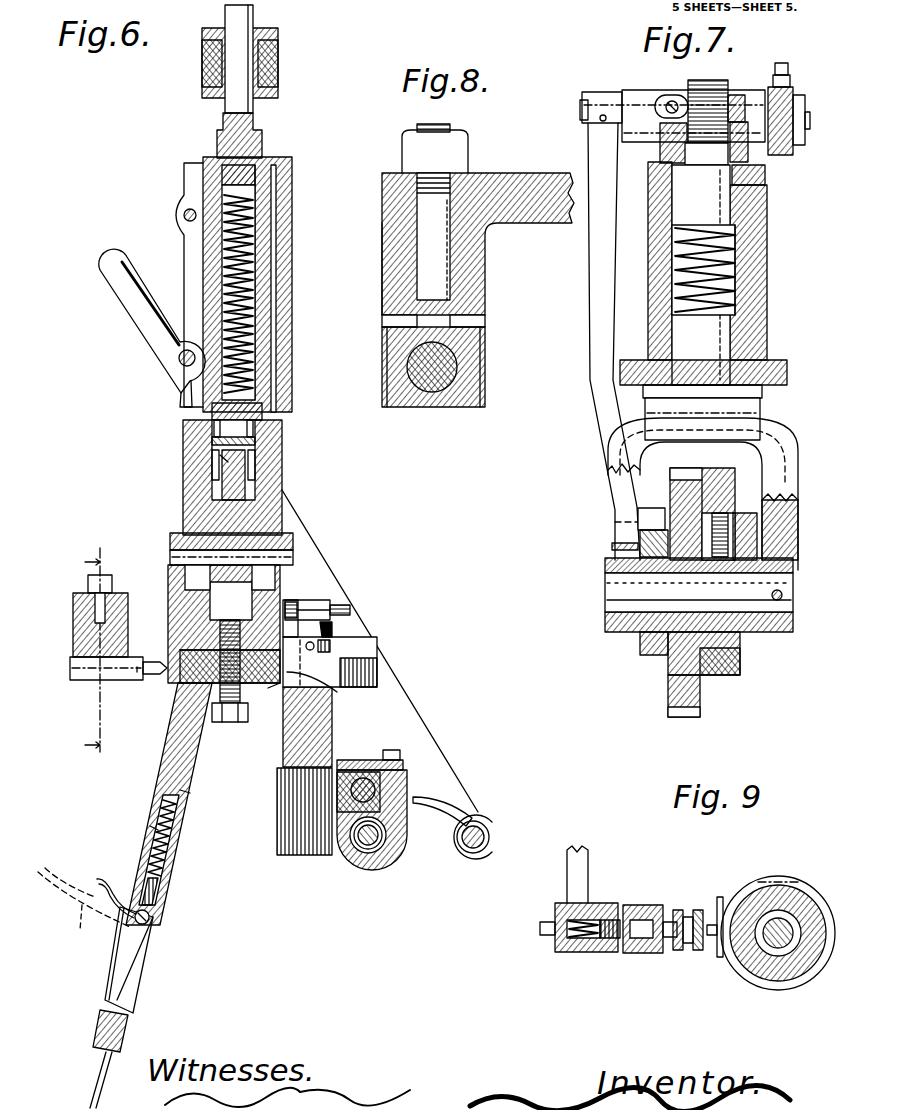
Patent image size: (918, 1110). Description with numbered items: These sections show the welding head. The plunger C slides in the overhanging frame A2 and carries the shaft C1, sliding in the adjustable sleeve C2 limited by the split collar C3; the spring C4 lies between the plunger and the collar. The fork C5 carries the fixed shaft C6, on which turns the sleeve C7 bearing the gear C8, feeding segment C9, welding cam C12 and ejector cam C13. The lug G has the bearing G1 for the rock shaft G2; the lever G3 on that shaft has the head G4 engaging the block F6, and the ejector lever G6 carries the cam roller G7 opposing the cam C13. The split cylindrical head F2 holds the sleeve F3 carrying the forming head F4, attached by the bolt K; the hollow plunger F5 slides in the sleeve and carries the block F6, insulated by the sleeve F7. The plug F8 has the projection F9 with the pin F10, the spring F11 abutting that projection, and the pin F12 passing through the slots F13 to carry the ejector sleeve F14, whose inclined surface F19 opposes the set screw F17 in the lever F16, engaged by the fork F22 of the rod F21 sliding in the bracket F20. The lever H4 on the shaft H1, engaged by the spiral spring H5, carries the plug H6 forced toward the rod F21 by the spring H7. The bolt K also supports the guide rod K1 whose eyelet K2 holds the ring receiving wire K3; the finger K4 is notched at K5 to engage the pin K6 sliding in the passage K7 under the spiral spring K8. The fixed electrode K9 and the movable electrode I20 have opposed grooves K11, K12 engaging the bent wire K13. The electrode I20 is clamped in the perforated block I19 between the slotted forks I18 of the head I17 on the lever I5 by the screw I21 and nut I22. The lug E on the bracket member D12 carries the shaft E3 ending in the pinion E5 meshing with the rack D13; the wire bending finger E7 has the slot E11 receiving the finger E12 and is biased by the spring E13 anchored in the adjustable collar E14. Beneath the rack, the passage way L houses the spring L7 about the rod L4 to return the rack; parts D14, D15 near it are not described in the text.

In FIG. 6, the block F6 is at (262, 33).
In FIG. 6, the head G4 is at (203, 66).
In FIG. 6, the sleeve F7 is at (226, 104).
In FIG. 6, the hollow plunger F5 is at (250, 140).
In FIG. 9, the hollow plunger F5 is at (783, 957).
In FIG. 6, the split cylindrical head F2 is at (284, 304).
In FIG. 6, the sleeve F3 is at (266, 286).
In FIG. 9, the sleeve F3 is at (803, 963).
In FIG. 6, the spring F11 is at (242, 231).
In FIG. 6, the lever H4 is at (125, 305).
In FIG. 9, the lever H4 is at (583, 857).
In FIG. 6, the plug F8 is at (240, 512).
In FIG. 6, the projection F9 is at (246, 482).
In FIG. 9, the projection F9 is at (767, 952).
In FIG. 6, the pin F10 is at (240, 441).
In FIG. 6, the rod F21 is at (222, 458).
In FIG. 9, the rod F21 is at (665, 938).
In FIG. 6, the slots F13 is at (187, 538).
In FIG. 6, the pin F12 is at (292, 553).
In FIG. 6, the ejector sleeve F14 is at (195, 578).
In FIG. 9, the ejector sleeve F14 is at (813, 897).
In FIG. 6, the horizontal groove K11 is at (180, 640).
In FIG. 6, the horizontal groove K12 is at (180, 672).
In FIG. 6, the bolt K is at (226, 712).
In FIG. 6, the forming head F4 is at (268, 689).
In FIG. 6, the fixed terminal or electrode K9 is at (176, 691).
In FIG. 6, the guide rod K1 is at (186, 786).
In FIG. 6, the passage K7 is at (166, 848).
In FIG. 6, the spiral spring K8 is at (150, 828).
In FIG. 6, the pin K6 is at (153, 886).
In FIG. 6, the finger K4 is at (133, 950).
In FIG. 6, the notch K5 is at (100, 883).
In FIG. 6, the eyelet K2 is at (105, 1050).
In FIG. 6, the ring receiving wire K3 is at (95, 1102).
In FIG. 6, the lug E is at (283, 748).
In FIG. 6, the pinion E5 is at (297, 852).
In FIG. 6, the wire bending finger E7 is at (372, 668).
In FIG. 6, the slot E11 is at (332, 647).
In FIG. 6, the shaft E3 is at (310, 600).
In FIG. 6, the adjustable collar E14 is at (330, 603).
In FIG. 6, the spring E13 is at (340, 612).
In FIG. 6, the finger E12 is at (333, 630).
In FIG. 6, the wire K13 is at (337, 692).
In FIG. 6, the plate D14 is at (355, 760).
In FIG. 6, the lug D15 is at (394, 744).
In FIG. 6, the passage way L is at (347, 872).
In FIG. 6, the rack D13 is at (395, 782).
In FIG. 6, the spring L7 is at (380, 844).
In FIG. 6, the bracket member D12 is at (378, 868).
In FIG. 6, the rod L4 is at (367, 850).
In FIG. 6, the shaft H1 is at (495, 835).
In FIG. 6, the spiral spring H5 is at (473, 817).
In FIG. 9, the spiral spring H5 is at (565, 950).
In FIG. 6, the head I17 is at (78, 640).
In FIG. 8, the head I17 is at (480, 290).
In FIG. 6, the nut I22 is at (90, 590).
In FIG. 8, the nut I22 is at (462, 148).
In FIG. 6, the screw I21 is at (96, 615).
In FIG. 8, the screw I21 is at (440, 250).
In FIG. 6, the slotted forks I18 is at (90, 668).
In FIG. 8, the slotted forks I18 is at (480, 322).
In FIG. 6, the perforated block I19 is at (85, 676).
In FIG. 8, the perforated block I19 is at (472, 362).
In FIG. 6, the electrode I20 is at (137, 668).
In FIG. 8, the electrode I20 is at (450, 378).
In FIG. 8, the lever I5 is at (538, 188).
In FIG. 7, the bearing G1 is at (646, 78).
In FIG. 7, the lug G is at (662, 150).
In FIG. 7, the screw threaded split collar C3 is at (735, 98).
In FIG. 7, the lever G3 is at (790, 98).
In FIG. 7, the rock shaft G2 is at (810, 114).
In FIG. 7, the screw threaded adjustable sleeve C2 is at (755, 180).
In FIG. 7, the shaft C1 is at (742, 204).
In FIG. 7, the plunger C is at (722, 340).
In FIG. 7, the overhanging portion of the frame A2 is at (745, 283).
In FIG. 7, the spring C4 is at (752, 256).
In FIG. 7, the fork C5 is at (790, 465).
In FIG. 7, the ejector lever G6 is at (600, 408).
In FIG. 7, the cam roller G7 is at (645, 515).
In FIG. 7, the adjustable feeding segment C9 is at (730, 492).
In FIG. 7, the welding cam C12 is at (752, 535).
In FIG. 7, the fixed shaft C6 is at (610, 587).
In FIG. 7, the ejector cam C13 is at (650, 656).
In FIG. 7, the sleeve C7 is at (727, 622).
In FIG. 7, the gear C8 is at (684, 714).
In FIG. 9, the spring H7 is at (583, 938).
In FIG. 9, the plug H6 is at (600, 953).
In FIG. 9, the bracket F20 is at (642, 904).
In FIG. 9, the lever F16 is at (690, 915).
In FIG. 9, the set screw F17 is at (713, 952).
In FIG. 9, the inclined surface F19 is at (718, 926).
In FIG. 9, the fork F22 is at (680, 951).